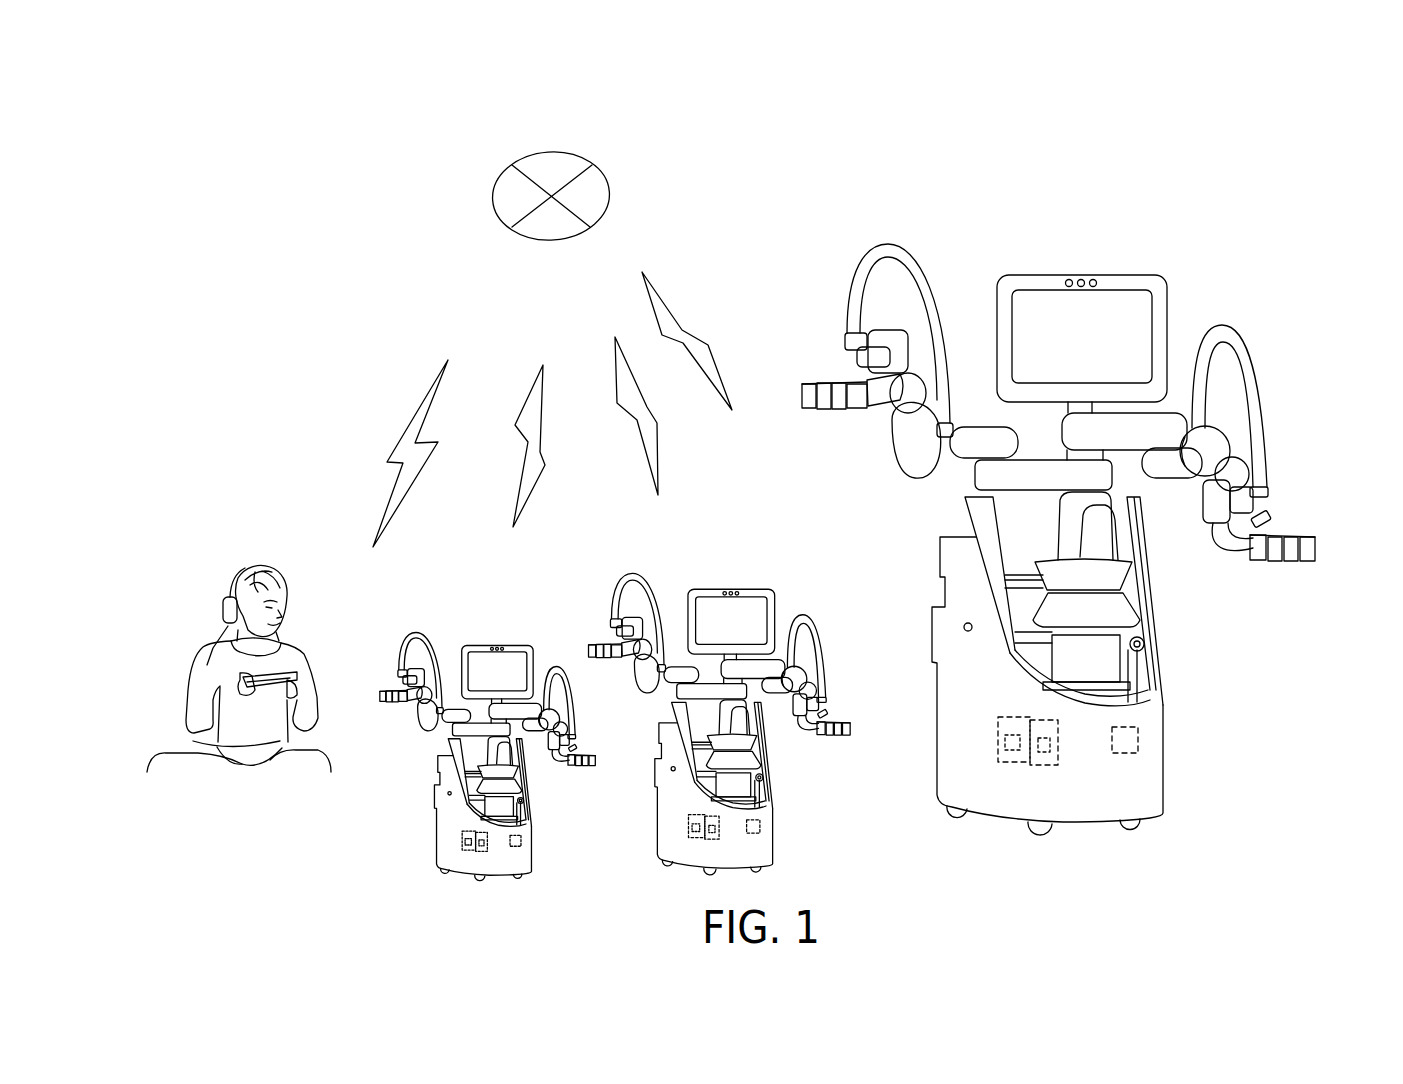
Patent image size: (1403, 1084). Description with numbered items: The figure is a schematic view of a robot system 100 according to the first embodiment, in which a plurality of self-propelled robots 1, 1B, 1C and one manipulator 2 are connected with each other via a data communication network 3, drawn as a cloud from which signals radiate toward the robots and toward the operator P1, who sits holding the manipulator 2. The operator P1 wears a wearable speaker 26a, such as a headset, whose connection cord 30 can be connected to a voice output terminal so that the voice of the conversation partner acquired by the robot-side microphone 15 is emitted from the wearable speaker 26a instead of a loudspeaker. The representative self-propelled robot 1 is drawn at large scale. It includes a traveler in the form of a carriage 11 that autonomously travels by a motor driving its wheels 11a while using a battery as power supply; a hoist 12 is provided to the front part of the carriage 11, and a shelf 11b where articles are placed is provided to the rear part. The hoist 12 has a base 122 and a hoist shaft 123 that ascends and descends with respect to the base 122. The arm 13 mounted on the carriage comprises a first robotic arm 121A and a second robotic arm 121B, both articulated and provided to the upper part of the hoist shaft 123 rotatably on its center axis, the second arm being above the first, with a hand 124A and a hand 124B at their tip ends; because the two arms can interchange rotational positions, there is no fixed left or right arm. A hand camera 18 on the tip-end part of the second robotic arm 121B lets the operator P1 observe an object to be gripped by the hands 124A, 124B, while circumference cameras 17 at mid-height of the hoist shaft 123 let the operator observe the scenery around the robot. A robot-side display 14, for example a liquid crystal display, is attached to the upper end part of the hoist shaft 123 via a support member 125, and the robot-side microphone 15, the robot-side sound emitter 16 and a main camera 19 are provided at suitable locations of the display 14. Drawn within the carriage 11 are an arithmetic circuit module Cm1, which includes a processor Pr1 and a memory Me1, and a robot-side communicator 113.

The robot control system 100 is at (718, 128).
The data communication network 3 is at (561, 150).
The self-propelled robot 1 is at (1065, 508).
The self-propelled robot 1B is at (723, 555).
The self-propelled robot 1C is at (499, 621).
The operator P1 is at (228, 653).
The manipulator 2 is at (287, 668).
The wearable speaker 26a is at (226, 605).
The connection cord 30 is at (210, 652).
The robot-side display 14 is at (1092, 307).
The robot-side microphone 15 is at (1066, 280).
The main camera 19 is at (1080, 279).
The robot-side sound emitter 16 is at (1096, 279).
The support member 125 is at (1062, 410).
The arm 13 is at (928, 500).
The first robotic arm 121A is at (850, 245).
The hand 124A is at (820, 385).
The second robotic arm 121B is at (1276, 370).
The hand 124B is at (1295, 533).
The hand camera 18 is at (1268, 513).
The carriage 11 is at (1060, 715).
The wheels 11a is at (1042, 830).
The shelf 11b is at (1015, 572).
The circumference cameras 17 is at (963, 628).
The hoist shaft 123 is at (1120, 645).
The hoist 12 is at (1178, 662).
The base 122 is at (1125, 698).
The robot-side communicator 113 is at (1140, 740).
The arithmetic circuit module Cm1 is at (1000, 737).
The processor Pr1 is at (1000, 746).
The memory Me1 is at (1060, 745).